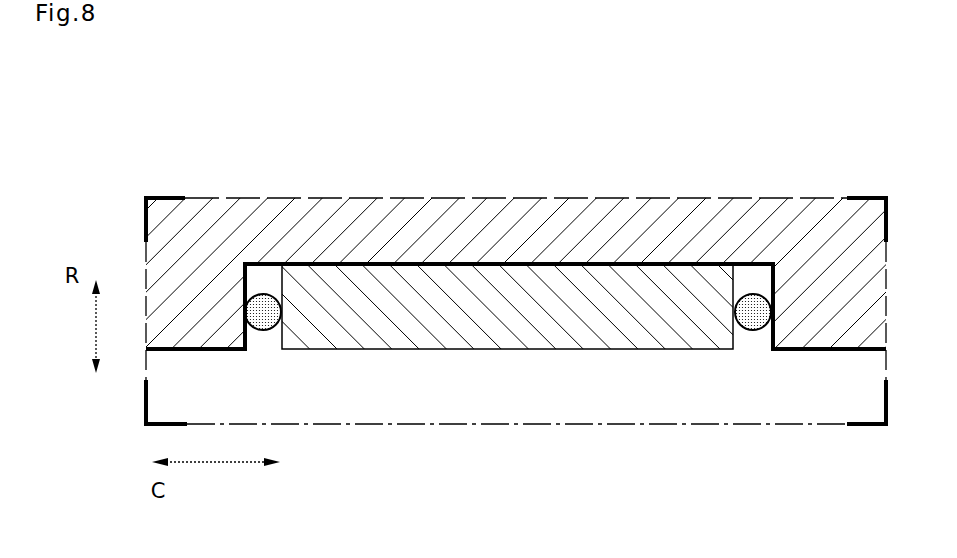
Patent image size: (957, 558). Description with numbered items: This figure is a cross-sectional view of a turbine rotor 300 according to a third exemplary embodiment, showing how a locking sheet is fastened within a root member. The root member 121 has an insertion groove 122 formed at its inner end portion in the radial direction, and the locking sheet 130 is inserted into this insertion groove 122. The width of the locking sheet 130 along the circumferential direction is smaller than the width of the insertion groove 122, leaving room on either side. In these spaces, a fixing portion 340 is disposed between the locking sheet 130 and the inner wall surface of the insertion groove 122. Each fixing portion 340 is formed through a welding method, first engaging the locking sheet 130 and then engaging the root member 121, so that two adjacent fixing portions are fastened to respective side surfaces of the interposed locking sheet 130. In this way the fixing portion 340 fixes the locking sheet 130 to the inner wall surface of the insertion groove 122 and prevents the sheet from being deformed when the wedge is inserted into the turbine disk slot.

The turbine rotor 300 is at (110, 117).
The root member 121 is at (523, 238).
The insertion groove 122 is at (247, 278).
The locking sheet 130 is at (505, 320).
The fixing portion 340 is at (266, 330).